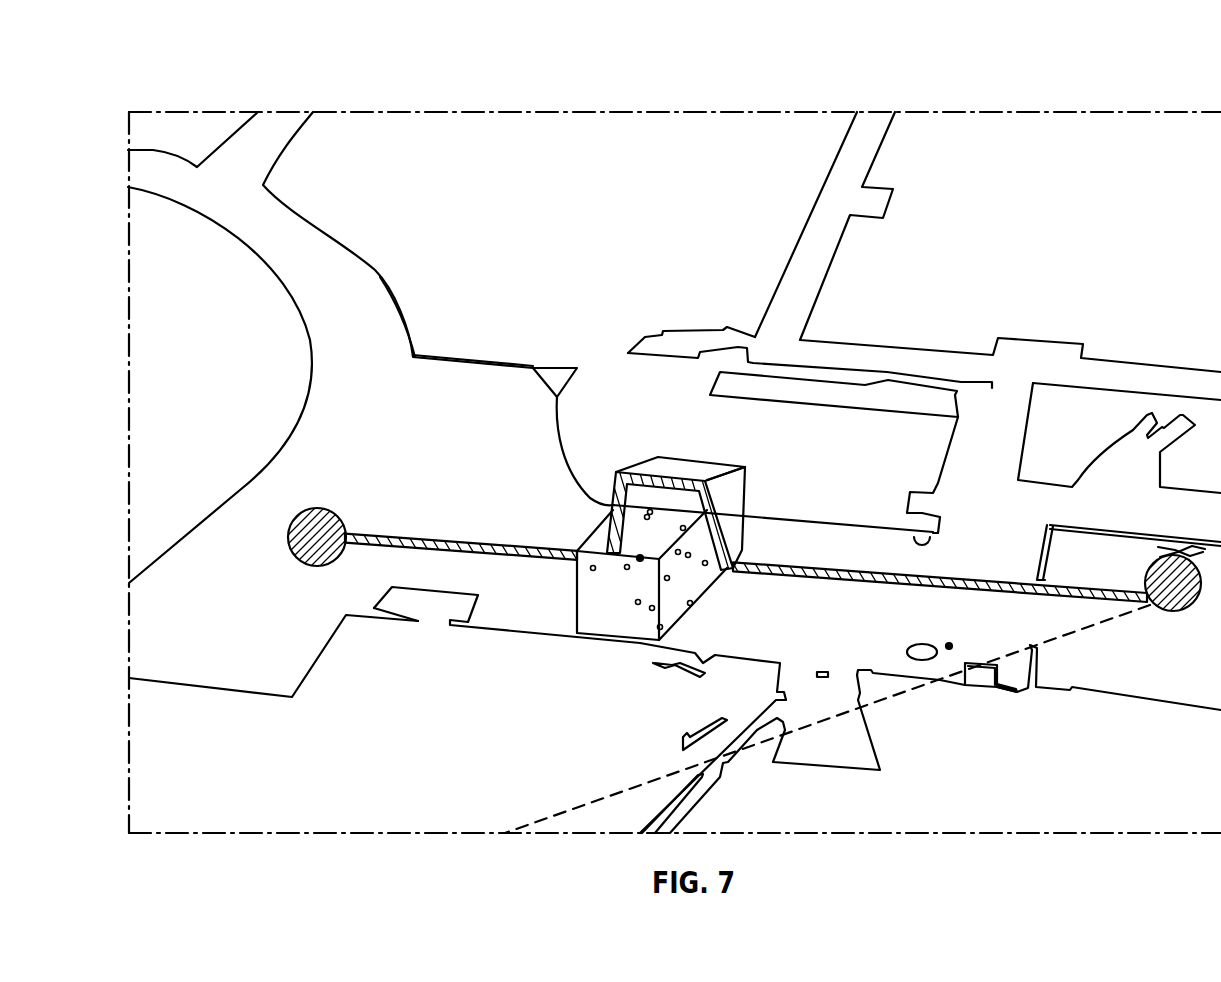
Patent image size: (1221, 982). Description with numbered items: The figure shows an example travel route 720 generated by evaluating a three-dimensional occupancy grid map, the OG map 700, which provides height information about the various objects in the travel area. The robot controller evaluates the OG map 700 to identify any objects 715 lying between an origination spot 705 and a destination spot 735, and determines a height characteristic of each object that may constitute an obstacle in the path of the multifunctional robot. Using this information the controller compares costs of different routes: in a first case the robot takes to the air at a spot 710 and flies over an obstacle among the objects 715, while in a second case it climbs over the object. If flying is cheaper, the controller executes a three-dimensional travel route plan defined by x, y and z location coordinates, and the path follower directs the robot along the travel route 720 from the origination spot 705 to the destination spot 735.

The 3D OG map 700 is at (150, 64).
The origination spot 705 is at (1159, 618).
The spot 710 is at (740, 590).
The objects 715 is at (624, 585).
The travel route 720 is at (516, 546).
The destination spot 735 is at (278, 552).